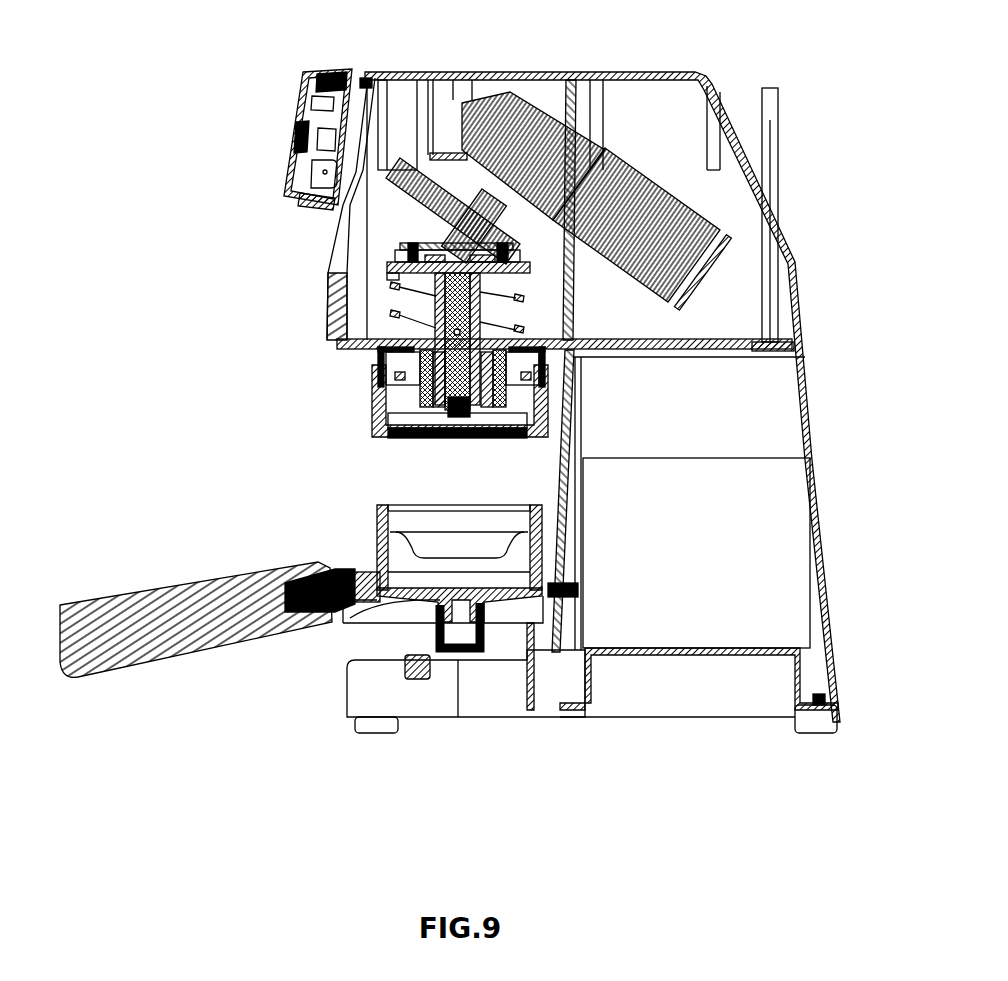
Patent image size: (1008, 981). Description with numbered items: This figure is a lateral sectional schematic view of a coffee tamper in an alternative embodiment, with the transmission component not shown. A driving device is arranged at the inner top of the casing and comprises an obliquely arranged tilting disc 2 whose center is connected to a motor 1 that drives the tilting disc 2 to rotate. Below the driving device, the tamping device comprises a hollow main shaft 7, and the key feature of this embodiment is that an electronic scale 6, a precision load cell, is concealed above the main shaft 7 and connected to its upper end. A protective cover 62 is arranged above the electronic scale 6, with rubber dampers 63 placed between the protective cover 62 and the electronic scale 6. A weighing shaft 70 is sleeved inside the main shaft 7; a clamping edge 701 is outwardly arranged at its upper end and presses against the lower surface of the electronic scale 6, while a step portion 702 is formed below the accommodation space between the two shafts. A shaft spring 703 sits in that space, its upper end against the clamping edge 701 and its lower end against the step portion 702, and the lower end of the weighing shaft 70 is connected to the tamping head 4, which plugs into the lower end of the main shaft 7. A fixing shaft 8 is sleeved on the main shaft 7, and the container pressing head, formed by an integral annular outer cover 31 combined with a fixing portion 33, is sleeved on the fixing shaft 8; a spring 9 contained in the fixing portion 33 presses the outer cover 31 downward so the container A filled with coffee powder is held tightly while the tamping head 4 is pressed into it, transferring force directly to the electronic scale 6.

The motor 1 is at (618, 170).
The tilting disc 2 is at (404, 165).
The spring 9 is at (527, 292).
The protective cover 62 is at (398, 249).
The electronic scale 6 is at (400, 257).
The clamping edge 701 is at (413, 247).
The rubber dampers 63 is at (510, 255).
The main shaft 7 is at (435, 330).
The weighing shaft 70 is at (455, 300).
The step portion 702 is at (525, 329).
The fixing shaft 8 is at (410, 384).
The fixing portion 33 is at (407, 374).
The outer cover 31 is at (370, 408).
The tamping head 4 is at (403, 438).
The shaft spring 703 is at (770, 347).
The container A is at (357, 537).